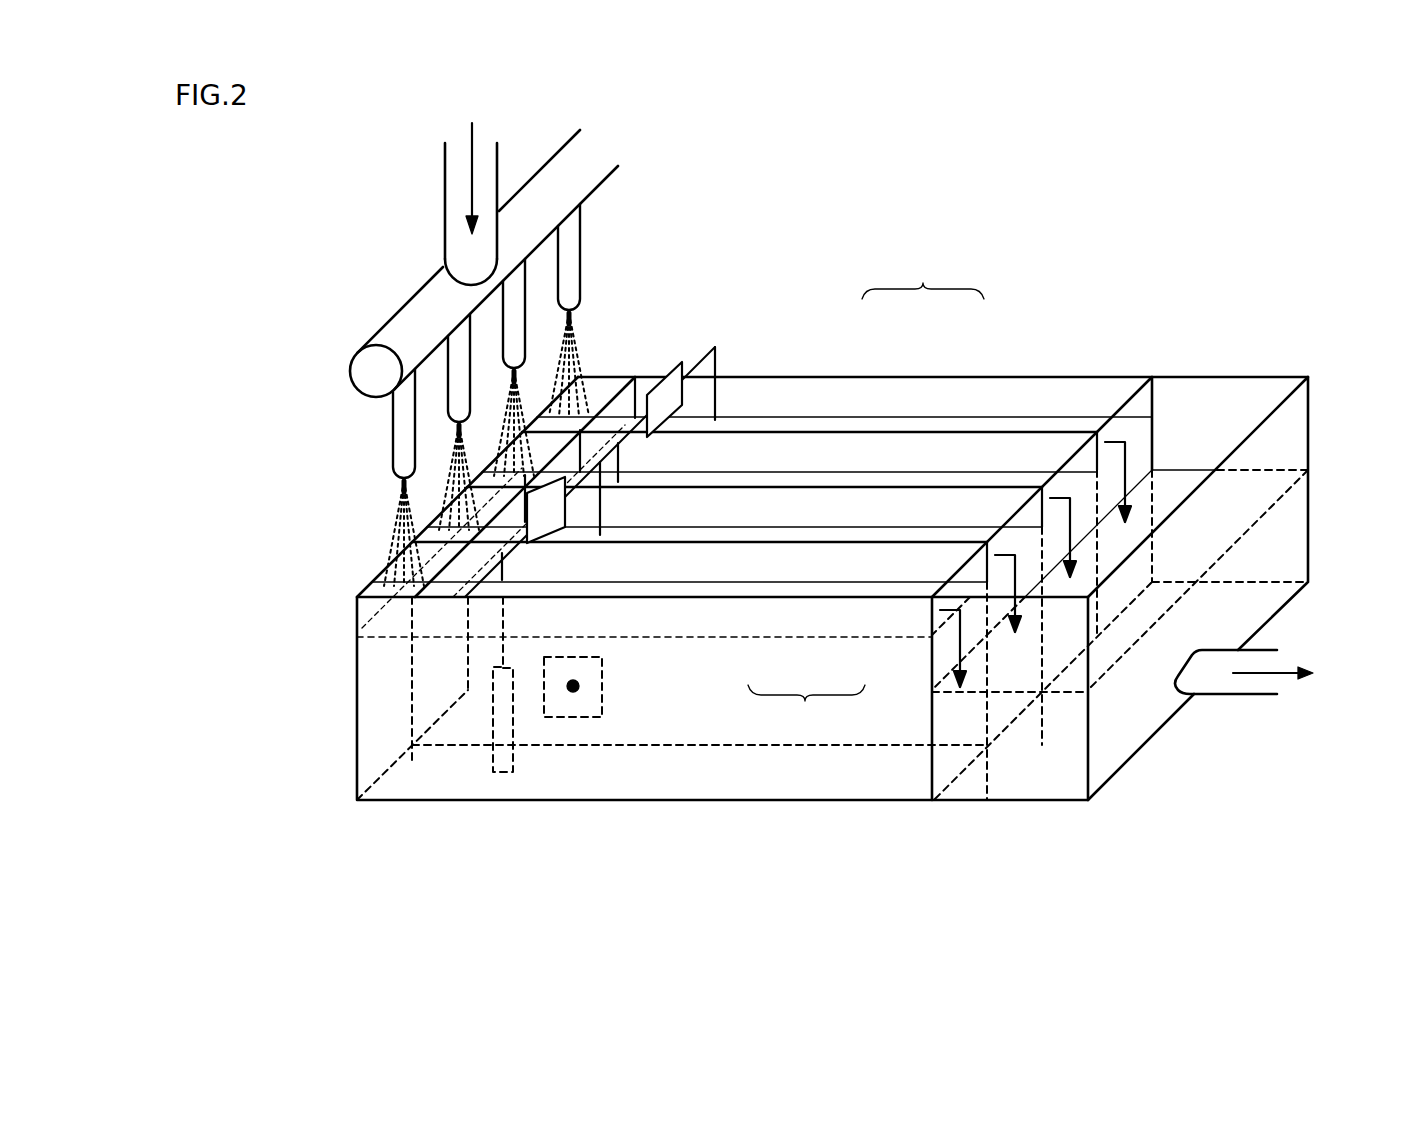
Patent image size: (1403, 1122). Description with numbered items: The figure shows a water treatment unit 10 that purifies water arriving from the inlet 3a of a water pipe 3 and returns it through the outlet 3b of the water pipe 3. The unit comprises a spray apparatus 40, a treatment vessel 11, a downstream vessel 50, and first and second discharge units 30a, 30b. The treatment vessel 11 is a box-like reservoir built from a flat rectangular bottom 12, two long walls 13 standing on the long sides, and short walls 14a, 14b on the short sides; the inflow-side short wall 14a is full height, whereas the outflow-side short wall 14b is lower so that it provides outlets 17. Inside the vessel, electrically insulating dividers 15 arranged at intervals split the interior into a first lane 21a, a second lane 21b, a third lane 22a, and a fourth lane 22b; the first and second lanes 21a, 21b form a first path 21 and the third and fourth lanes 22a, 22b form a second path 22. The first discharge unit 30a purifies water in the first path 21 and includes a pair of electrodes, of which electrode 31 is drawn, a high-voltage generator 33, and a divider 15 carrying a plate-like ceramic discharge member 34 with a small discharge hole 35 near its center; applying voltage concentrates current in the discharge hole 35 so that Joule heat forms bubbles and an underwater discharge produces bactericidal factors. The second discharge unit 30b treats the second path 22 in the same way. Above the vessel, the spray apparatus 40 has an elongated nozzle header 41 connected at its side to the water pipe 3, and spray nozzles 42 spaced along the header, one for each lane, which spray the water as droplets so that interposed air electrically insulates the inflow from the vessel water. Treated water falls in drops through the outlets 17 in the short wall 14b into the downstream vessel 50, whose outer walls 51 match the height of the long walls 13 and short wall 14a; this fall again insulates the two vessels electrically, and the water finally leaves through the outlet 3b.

The water treatment unit 10 is at (1082, 170).
The treatment vessel 11 is at (355, 768).
The bottom 12 is at (640, 780).
The long walls 13 is at (1057, 375).
The short wall 14a is at (375, 581).
The short wall 14b is at (1140, 458).
The dividers 15 is at (828, 447).
The outlets 17 is at (1130, 422).
The first path 21 is at (806, 710).
The first lane 21a is at (723, 578).
The second lane 21b is at (775, 523).
The second path 22 is at (923, 276).
The third lane 22a is at (857, 468).
The fourth lane 22b is at (967, 413).
The first discharge unit 30a is at (612, 565).
The second discharge unit 30b is at (705, 340).
The electrode 31 is at (490, 773).
The high-voltage generator 33 is at (660, 395).
The discharge member 34 is at (606, 683).
The discharge hole 35 is at (575, 695).
The spray apparatus 40 is at (370, 213).
The nozzle header 41 is at (405, 325).
The spray nozzles 42 is at (460, 345).
The water pipe 3 is at (445, 190).
The inlet 3a is at (443, 270).
The outlet 3b is at (1175, 678).
The downstream vessel 50 is at (1312, 442).
The outer walls 51 is at (1253, 375).